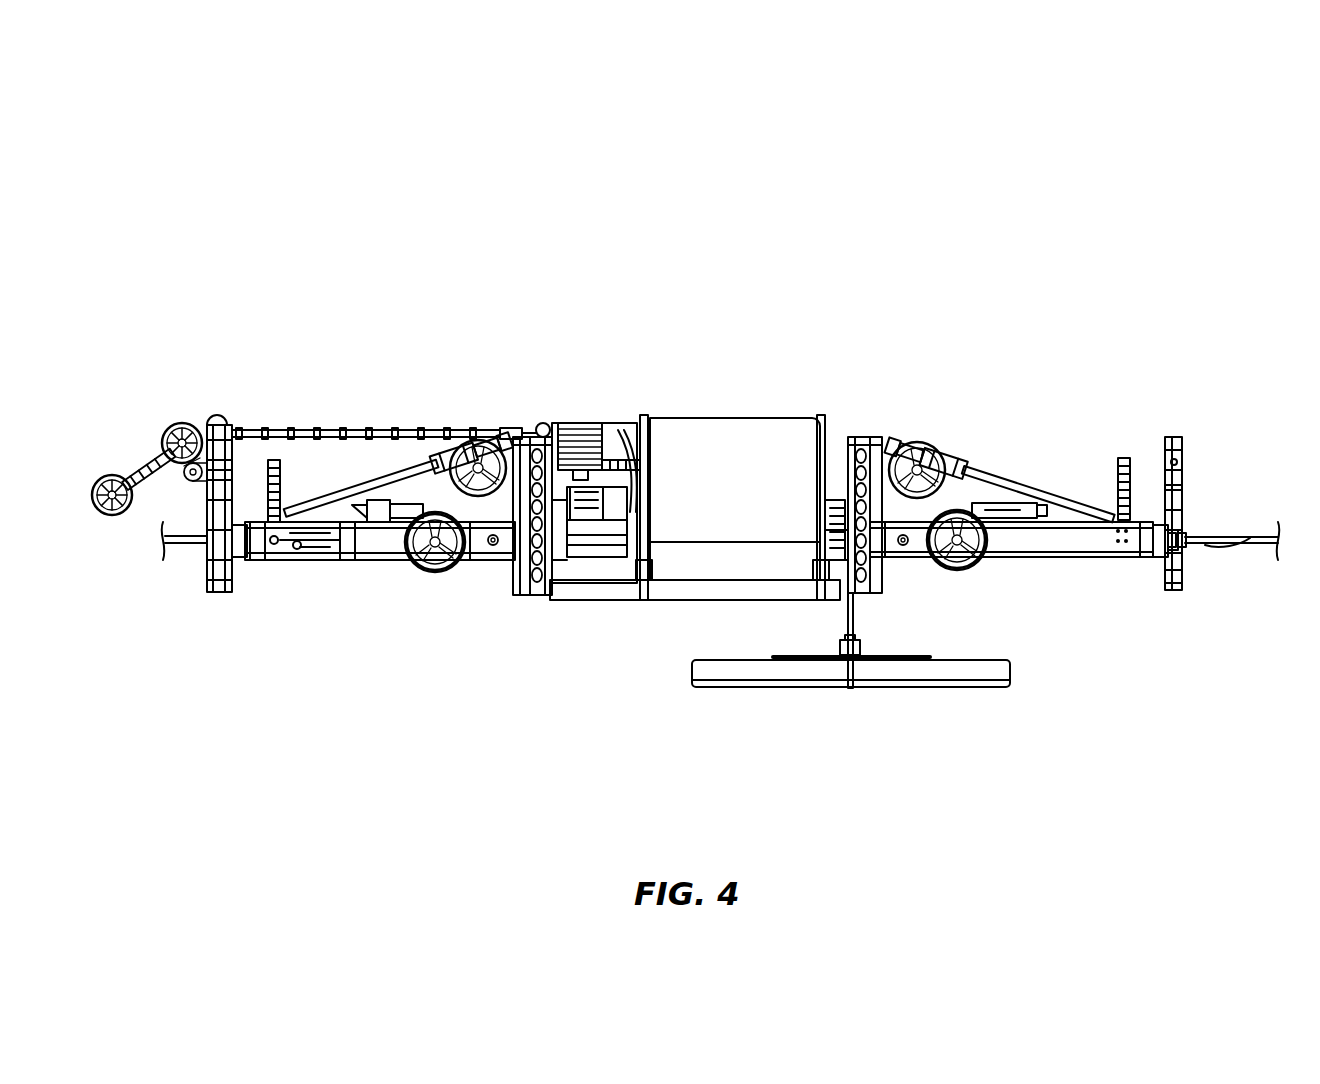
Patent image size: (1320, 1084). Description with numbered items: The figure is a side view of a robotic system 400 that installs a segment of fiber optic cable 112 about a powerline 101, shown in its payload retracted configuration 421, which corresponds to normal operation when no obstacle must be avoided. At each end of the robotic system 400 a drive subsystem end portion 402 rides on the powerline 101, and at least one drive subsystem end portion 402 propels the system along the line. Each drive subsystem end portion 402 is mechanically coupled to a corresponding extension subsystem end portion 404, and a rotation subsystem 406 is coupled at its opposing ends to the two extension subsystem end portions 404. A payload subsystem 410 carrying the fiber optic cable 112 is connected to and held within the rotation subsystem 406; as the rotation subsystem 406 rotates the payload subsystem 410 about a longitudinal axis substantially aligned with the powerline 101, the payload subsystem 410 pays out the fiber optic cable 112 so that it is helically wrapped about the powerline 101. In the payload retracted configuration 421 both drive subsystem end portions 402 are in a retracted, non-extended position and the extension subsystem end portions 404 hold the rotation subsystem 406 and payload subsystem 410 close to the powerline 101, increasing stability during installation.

The robotic system 400 is at (228, 228).
The powerline 101 is at (180, 548).
The fiber optic cable 112 is at (1190, 533).
The drive subsystem end portion 402 is at (370, 566).
The extension subsystem end portion 404 is at (880, 388).
The rotation subsystem 406 is at (593, 567).
The payload subsystem 410 is at (710, 418).
The payload retracted configuration 421 is at (1100, 294).